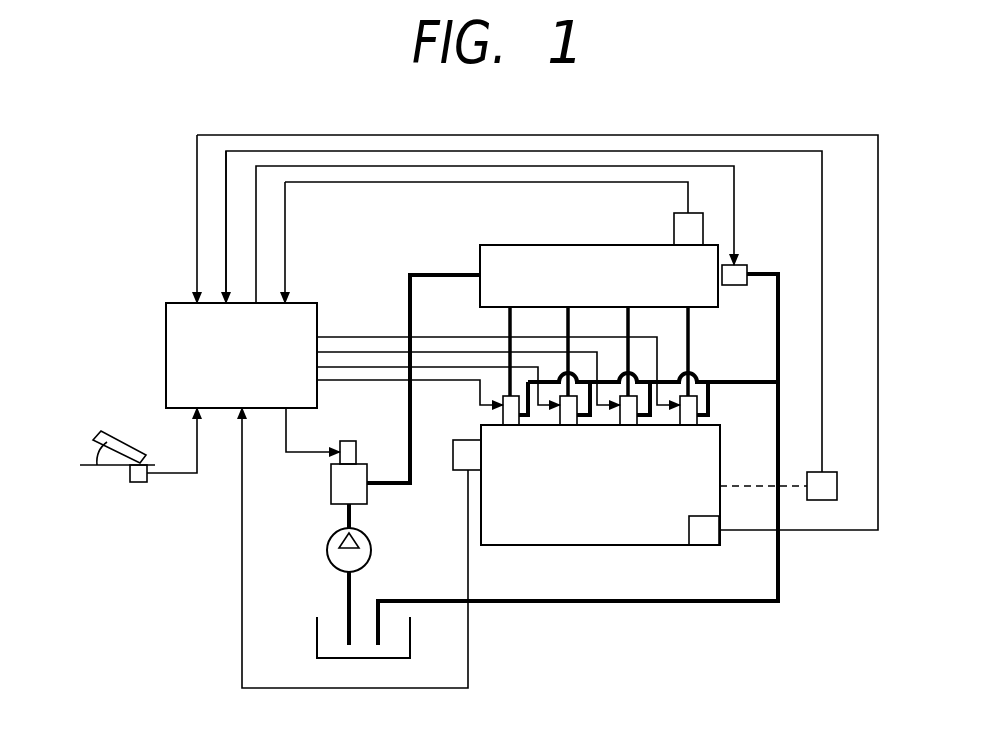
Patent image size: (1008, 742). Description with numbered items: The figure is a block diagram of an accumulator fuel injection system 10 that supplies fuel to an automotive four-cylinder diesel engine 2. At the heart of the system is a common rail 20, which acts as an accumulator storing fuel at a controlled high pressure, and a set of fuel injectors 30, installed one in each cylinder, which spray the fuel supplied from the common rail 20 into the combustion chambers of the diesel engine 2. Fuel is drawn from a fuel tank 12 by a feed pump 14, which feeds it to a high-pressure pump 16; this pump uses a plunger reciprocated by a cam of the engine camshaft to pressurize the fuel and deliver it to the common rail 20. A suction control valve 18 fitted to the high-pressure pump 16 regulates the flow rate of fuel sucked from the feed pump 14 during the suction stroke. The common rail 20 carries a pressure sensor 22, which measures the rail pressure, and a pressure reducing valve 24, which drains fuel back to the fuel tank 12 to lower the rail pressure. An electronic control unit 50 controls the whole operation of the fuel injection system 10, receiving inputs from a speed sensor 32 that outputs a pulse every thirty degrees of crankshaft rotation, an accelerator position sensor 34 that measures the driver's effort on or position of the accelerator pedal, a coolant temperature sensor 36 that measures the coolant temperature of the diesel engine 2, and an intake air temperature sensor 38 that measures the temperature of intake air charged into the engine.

The diesel engine 2 is at (571, 545).
The fuel injection system 10 is at (168, 185).
The fuel tank 12 is at (317, 625).
The feed pump 14 is at (327, 550).
The high-pressure pump 16 is at (331, 484).
The suction control valve 18 is at (350, 441).
The common rail 20 is at (520, 245).
The pressure sensor 22 is at (674, 228).
The pressure reducing valve 24 is at (745, 265).
The fuel injectors 30 is at (503, 418).
The speed sensor 32 is at (835, 472).
The accelerator position sensor 34 is at (138, 482).
The coolant temperature sensor 36 is at (705, 535).
The intake air temperature sensor 38 is at (453, 452).
The electronic control unit 50 is at (166, 357).